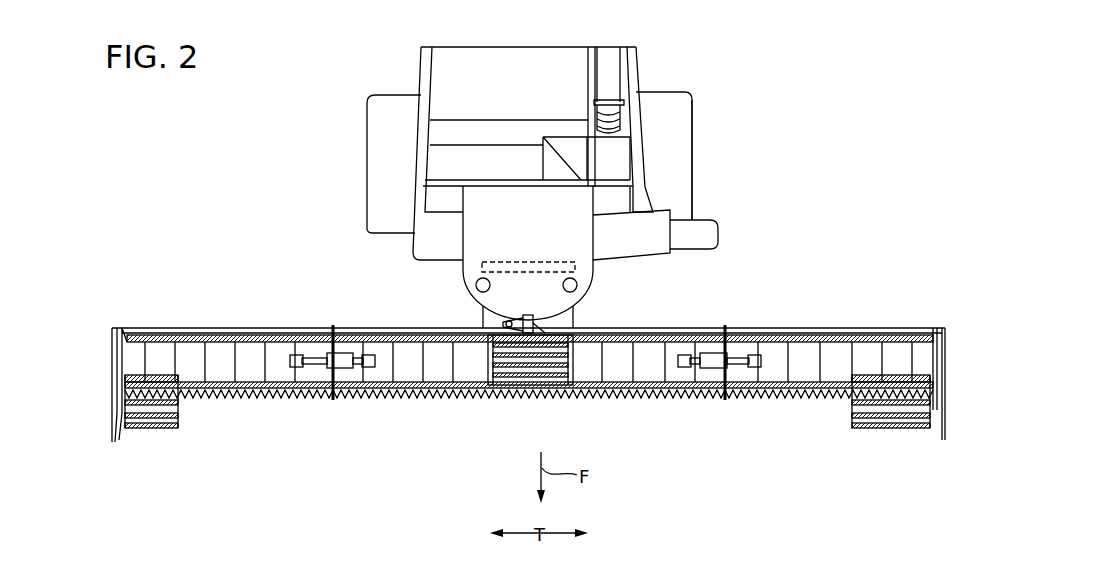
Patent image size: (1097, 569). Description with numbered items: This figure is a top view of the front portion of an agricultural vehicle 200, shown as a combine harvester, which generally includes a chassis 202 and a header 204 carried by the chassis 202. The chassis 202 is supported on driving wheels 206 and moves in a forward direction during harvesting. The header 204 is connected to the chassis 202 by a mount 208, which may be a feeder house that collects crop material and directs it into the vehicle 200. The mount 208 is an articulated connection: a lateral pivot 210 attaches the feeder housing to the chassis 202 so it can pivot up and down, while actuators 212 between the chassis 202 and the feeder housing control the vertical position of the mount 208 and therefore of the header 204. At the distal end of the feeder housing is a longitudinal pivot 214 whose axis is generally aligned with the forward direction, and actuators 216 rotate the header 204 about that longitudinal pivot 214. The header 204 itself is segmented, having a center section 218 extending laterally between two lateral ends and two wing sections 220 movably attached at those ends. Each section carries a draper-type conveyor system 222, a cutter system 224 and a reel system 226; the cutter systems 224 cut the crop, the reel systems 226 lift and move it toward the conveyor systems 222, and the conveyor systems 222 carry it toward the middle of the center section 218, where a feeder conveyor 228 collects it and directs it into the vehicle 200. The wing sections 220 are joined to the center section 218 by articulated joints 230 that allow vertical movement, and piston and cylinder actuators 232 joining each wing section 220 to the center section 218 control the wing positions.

The agricultural vehicle 200 is at (736, 100).
The chassis 202 is at (445, 88).
The header 204 is at (110, 335).
The driving wheels 206 is at (692, 198).
The mount 208 is at (580, 320).
The lateral pivot 210 is at (517, 262).
The actuators 212 is at (463, 273).
The longitudinal pivot 214 is at (538, 325).
The actuators 216 is at (518, 325).
The center section 218 is at (423, 327).
The wing sections 220 is at (203, 330).
The conveyor systems 222 is at (280, 365).
The cutter systems 224 is at (197, 400).
The reel systems 226 is at (150, 430).
The feeder conveyor 228 is at (528, 373).
The articulated joints 230 is at (334, 310).
The actuators 232 is at (347, 357).